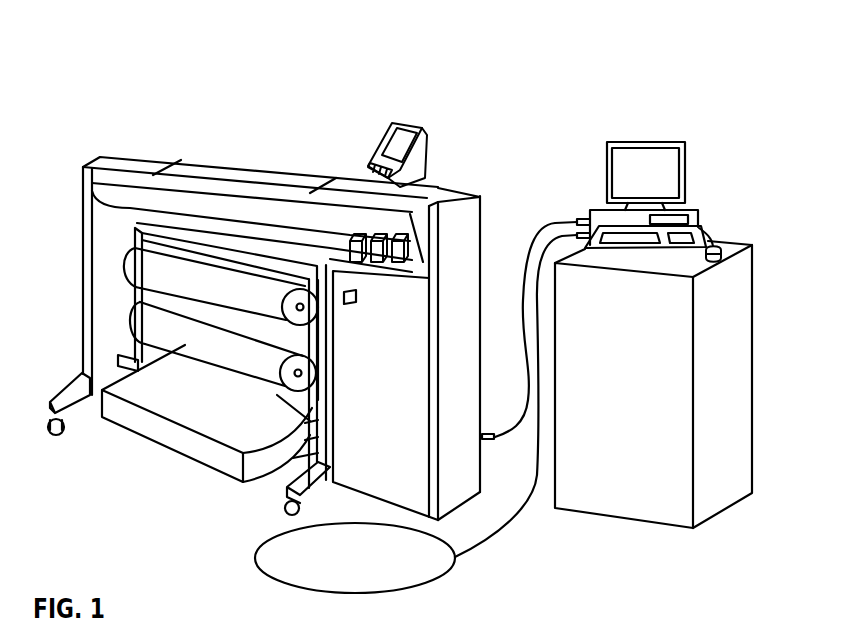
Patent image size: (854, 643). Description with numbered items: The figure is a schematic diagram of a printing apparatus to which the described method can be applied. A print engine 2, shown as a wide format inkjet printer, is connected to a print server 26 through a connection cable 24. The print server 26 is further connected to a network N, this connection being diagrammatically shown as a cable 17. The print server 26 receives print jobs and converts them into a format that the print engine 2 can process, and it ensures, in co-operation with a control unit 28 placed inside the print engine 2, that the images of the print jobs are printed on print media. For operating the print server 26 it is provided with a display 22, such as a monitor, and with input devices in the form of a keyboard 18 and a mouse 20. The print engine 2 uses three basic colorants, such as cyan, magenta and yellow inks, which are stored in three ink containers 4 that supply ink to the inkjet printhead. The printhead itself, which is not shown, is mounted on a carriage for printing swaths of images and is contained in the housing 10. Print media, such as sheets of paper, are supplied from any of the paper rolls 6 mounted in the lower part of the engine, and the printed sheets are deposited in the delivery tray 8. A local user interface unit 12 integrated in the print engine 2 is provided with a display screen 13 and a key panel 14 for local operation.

The print engine 2 is at (253, 171).
The ink containers 4 is at (402, 258).
The paper rolls 6 is at (147, 270).
The delivery tray 8 is at (183, 447).
The housing 10 is at (148, 205).
The local user interface unit 12 is at (402, 148).
The display screen 13 is at (393, 130).
The key panel 14 is at (372, 165).
The cable 17 is at (511, 523).
The keyboard 18 is at (663, 238).
The mouse 20 is at (720, 264).
The display 22 is at (686, 146).
The connection cable 24 is at (510, 435).
The print server 26 is at (595, 190).
The control unit 28 is at (470, 196).